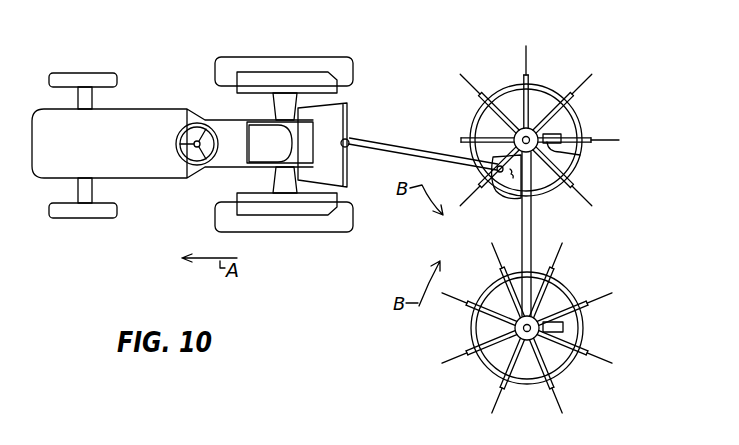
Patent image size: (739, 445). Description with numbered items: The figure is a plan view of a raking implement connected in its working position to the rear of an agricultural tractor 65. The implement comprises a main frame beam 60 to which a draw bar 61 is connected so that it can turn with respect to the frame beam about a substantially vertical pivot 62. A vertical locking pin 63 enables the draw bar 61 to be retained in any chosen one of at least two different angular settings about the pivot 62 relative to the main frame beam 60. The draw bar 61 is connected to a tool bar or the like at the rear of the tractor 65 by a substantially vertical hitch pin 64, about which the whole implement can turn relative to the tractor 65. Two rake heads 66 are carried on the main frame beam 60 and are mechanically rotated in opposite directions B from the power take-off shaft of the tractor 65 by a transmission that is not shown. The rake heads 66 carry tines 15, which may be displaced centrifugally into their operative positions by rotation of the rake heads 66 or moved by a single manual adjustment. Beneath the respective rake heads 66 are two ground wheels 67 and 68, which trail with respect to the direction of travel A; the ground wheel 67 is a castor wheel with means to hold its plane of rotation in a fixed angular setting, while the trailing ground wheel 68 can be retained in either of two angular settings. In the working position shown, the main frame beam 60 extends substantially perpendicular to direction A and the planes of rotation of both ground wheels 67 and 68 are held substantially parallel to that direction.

The tines 15 is at (520, 60).
The main frame beam 60 is at (533, 233).
The draw bar 61 is at (410, 152).
The pivot 62 is at (494, 172).
The locking pin 63 is at (513, 189).
The hitch pin 64 is at (350, 139).
The agricultural tractor 65 is at (292, 233).
The rake heads 66 is at (574, 110).
The ground wheel 67 is at (580, 155).
The ground wheel 68 is at (562, 328).